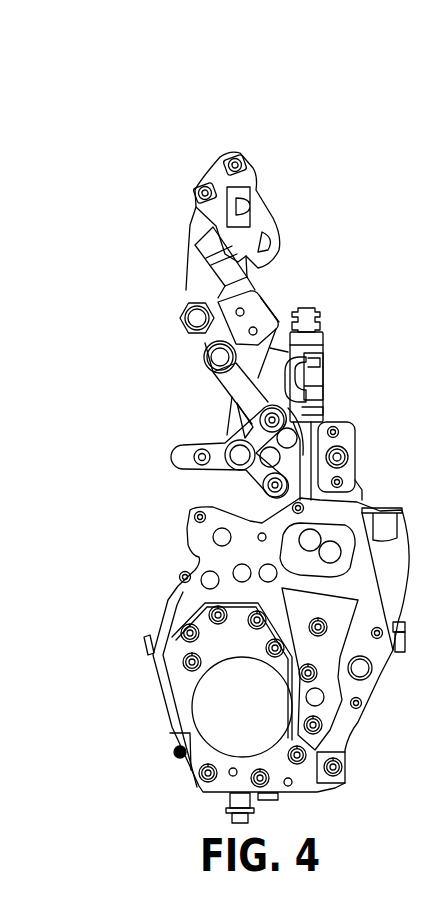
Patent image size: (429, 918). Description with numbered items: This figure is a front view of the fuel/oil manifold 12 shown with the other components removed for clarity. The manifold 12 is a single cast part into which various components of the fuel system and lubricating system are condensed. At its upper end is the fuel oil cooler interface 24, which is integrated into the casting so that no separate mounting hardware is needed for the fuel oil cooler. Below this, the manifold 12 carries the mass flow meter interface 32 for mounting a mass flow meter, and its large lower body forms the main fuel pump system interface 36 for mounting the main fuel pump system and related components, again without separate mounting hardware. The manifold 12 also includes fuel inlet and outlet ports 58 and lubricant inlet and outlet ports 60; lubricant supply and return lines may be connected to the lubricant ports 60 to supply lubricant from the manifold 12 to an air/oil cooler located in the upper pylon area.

The fuel/oil manifold 12 is at (182, 181).
The fuel oil cooler interface 24 is at (217, 153).
The mass flow meter interface 32 is at (222, 480).
The main fuel pump system interface 36 is at (185, 607).
The fuel inlet and outlet ports 58 is at (206, 353).
The lubricant inlet and outlet ports 60 is at (305, 307).